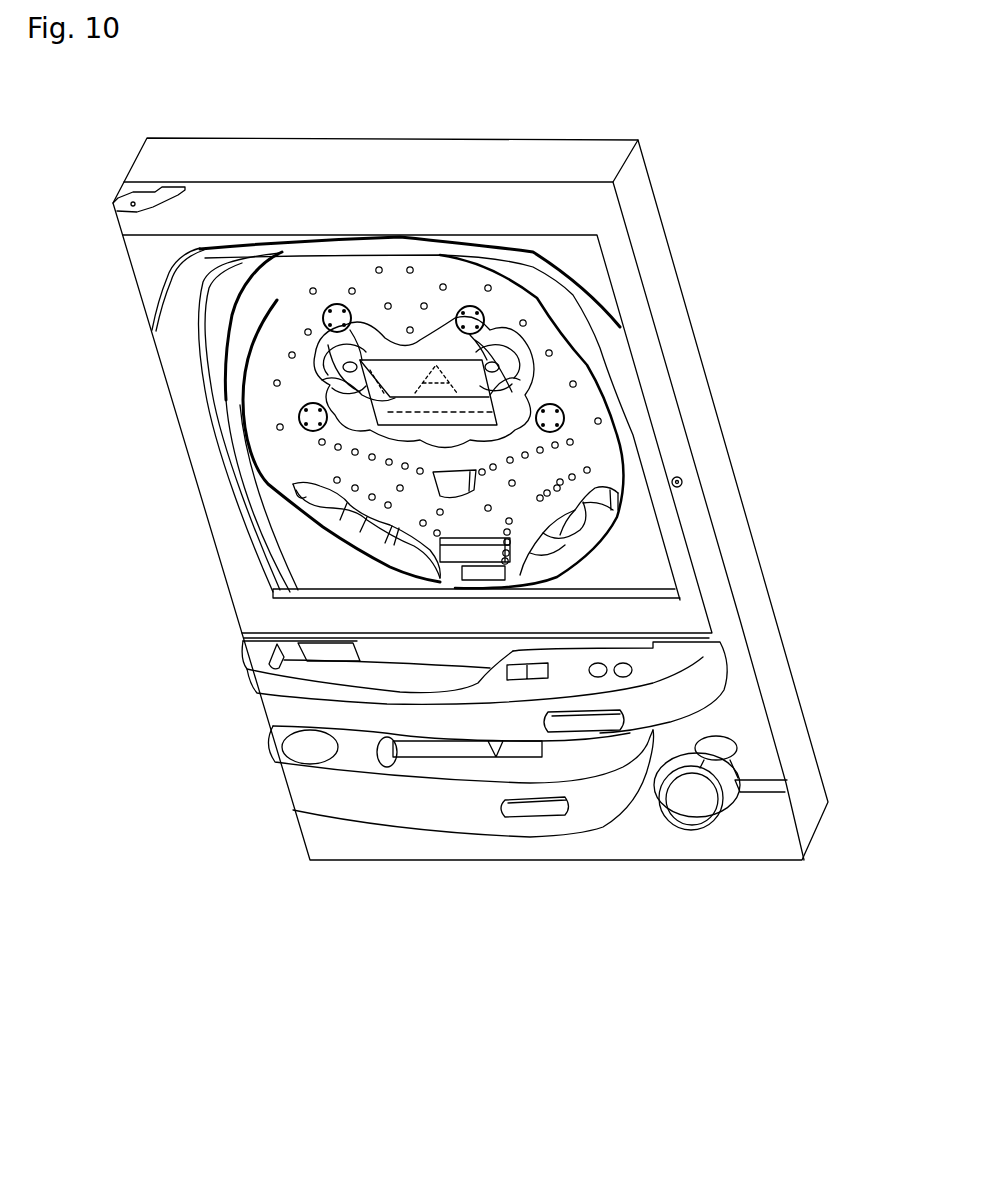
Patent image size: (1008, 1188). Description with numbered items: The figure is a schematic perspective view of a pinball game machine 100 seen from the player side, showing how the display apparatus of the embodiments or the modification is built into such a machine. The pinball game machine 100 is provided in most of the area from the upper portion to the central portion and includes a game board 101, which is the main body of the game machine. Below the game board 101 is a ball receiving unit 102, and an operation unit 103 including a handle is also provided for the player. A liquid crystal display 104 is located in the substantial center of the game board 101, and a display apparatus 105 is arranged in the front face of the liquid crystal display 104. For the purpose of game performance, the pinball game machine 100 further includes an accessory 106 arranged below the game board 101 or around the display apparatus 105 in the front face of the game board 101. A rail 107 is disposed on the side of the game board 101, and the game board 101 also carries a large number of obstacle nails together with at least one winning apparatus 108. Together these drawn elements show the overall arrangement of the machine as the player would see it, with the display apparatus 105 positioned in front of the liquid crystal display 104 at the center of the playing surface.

The pinball game machine 100 is at (788, 927).
The game board 101 is at (763, 620).
The ball receiving unit 102 is at (238, 642).
The operation unit 103 is at (742, 765).
The liquid crystal display 104 is at (463, 378).
The display apparatus 105 is at (397, 360).
The accessory 106 is at (355, 345).
The rail 107 is at (332, 360).
The winning apparatus 108 is at (475, 490).